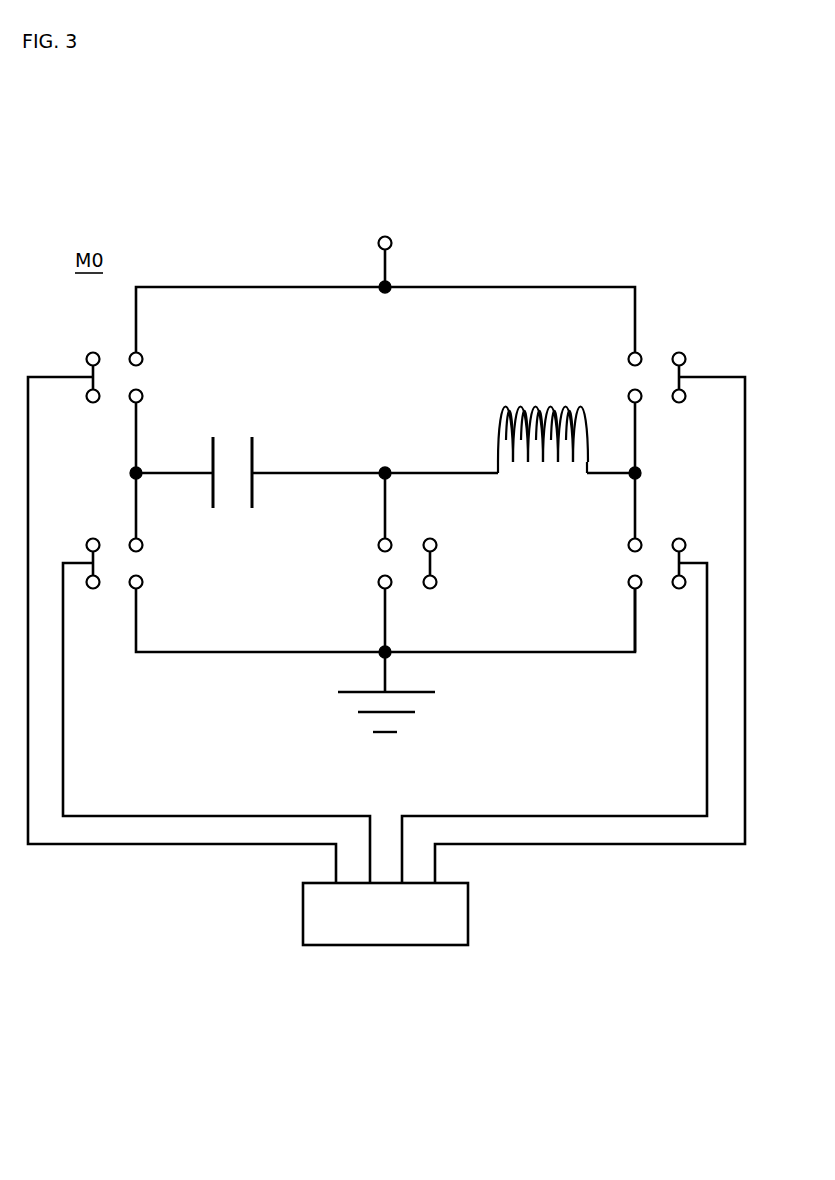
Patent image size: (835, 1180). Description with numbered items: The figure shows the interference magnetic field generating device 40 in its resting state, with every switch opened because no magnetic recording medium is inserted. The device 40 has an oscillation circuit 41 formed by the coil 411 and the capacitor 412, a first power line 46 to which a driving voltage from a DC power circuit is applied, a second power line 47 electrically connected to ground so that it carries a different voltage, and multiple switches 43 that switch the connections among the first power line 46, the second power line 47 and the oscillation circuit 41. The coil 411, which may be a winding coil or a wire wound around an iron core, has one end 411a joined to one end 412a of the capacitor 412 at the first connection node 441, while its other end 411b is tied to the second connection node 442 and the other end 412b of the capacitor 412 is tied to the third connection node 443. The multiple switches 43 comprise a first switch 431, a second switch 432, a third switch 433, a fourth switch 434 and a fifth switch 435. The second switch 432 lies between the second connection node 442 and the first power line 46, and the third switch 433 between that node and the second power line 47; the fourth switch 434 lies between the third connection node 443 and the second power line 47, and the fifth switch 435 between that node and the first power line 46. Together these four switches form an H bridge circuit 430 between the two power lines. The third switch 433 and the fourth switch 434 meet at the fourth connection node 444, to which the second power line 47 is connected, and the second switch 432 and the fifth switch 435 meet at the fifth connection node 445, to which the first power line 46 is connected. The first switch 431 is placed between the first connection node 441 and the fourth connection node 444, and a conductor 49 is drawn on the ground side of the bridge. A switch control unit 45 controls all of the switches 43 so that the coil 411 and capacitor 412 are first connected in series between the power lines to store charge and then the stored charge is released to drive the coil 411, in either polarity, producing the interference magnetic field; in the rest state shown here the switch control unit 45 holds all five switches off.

The interference magnetic field generating device 40 is at (700, 237).
The oscillation circuit 41 is at (453, 372).
The coil 411 is at (497, 430).
The one end of coil 411a is at (497, 480).
The other end of coil 411b is at (586, 480).
The capacitor 412 is at (256, 456).
The first electrode of capacitor 412a is at (253, 480).
The other end of capacitor 412b is at (211, 470).
The multiple switches 43 is at (386, 593).
The first switch 431 is at (407, 543).
The second switch 432 is at (660, 357).
The third switch 433 is at (656, 545).
The fourth switch 434 is at (117, 583).
The fifth switch 435 is at (116, 398).
The H bridge circuit 430 is at (205, 282).
The first connection node 441 is at (382, 480).
The second connection node 442 is at (640, 470).
The third connection node 443 is at (140, 477).
The fourth connection node 444 is at (383, 655).
The fifth connection node 445 is at (383, 289).
The switch control unit 45 is at (443, 947).
The first power line 46 is at (392, 266).
The second power line 47 is at (389, 670).
The wiring 49 is at (634, 610).